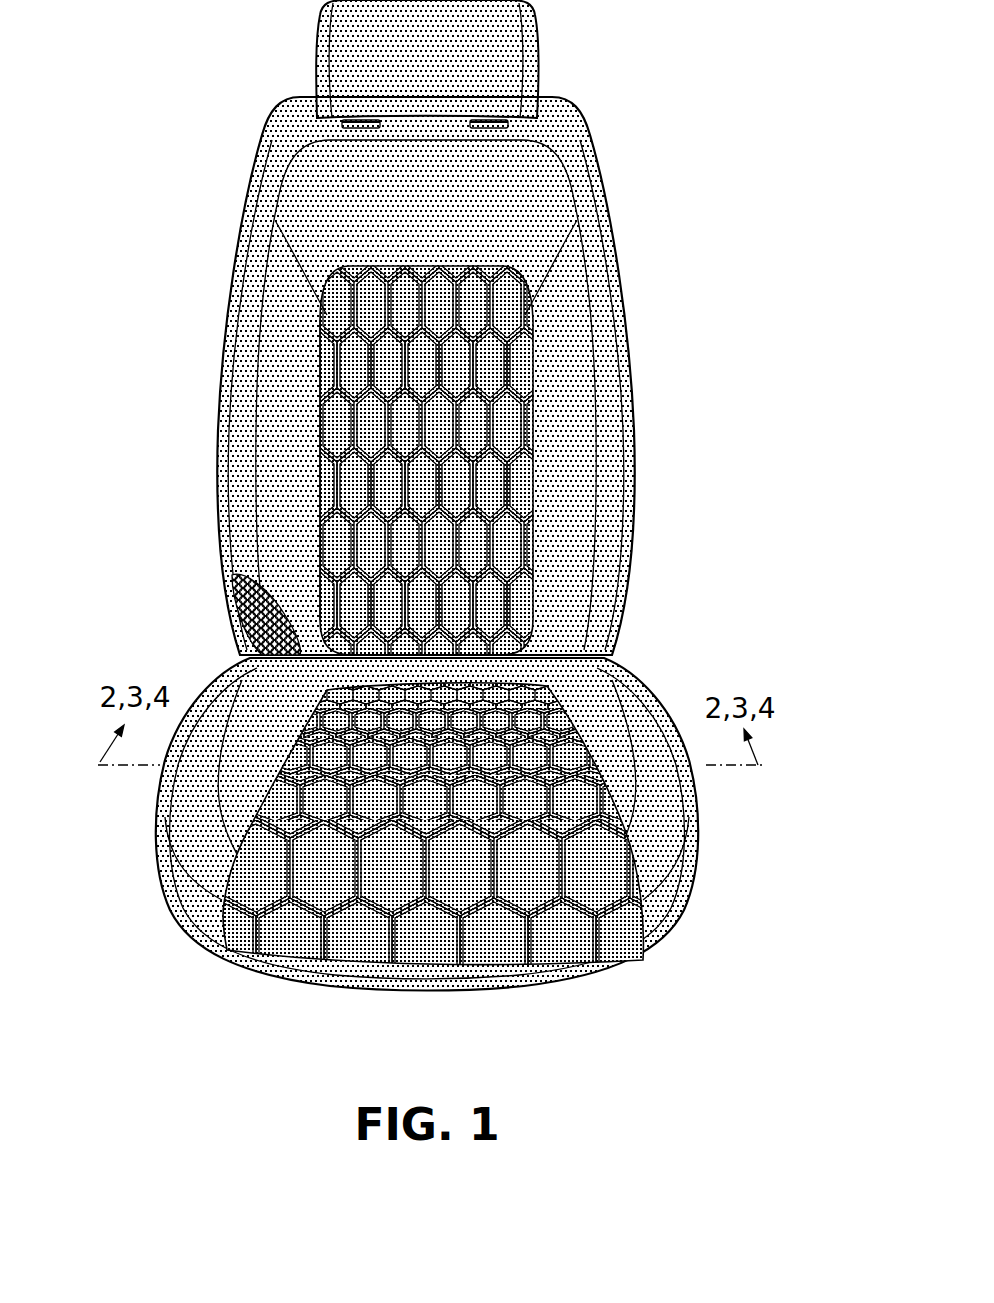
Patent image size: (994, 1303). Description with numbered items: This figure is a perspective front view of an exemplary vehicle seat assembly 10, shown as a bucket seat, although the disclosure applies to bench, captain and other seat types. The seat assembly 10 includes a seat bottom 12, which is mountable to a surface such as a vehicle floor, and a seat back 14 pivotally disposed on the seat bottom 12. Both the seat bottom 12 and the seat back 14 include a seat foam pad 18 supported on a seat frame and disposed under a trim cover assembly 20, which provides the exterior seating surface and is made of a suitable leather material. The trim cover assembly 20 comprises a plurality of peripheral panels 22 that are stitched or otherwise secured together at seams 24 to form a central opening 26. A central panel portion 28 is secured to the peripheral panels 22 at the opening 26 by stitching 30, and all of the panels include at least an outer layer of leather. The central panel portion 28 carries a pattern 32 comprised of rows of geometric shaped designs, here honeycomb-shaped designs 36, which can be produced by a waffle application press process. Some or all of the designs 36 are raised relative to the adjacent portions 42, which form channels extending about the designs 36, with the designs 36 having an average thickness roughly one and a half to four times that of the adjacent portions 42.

The seat assembly 10 is at (431, 537).
The seat bottom 12 is at (431, 865).
The seat back 14 is at (431, 473).
The seat foam pad 18 is at (257, 617).
The trim cover assembly 20 is at (647, 370).
The peripheral panels 22 is at (537, 188).
The seams 24 is at (576, 207).
The central opening 26 is at (535, 457).
The central panel portion 28 is at (493, 415).
The stitching 30 is at (323, 410).
The pattern 32 is at (255, 950).
The honeycomb-shaped designs 36 is at (493, 415).
The adjacent portions 42 is at (408, 335).